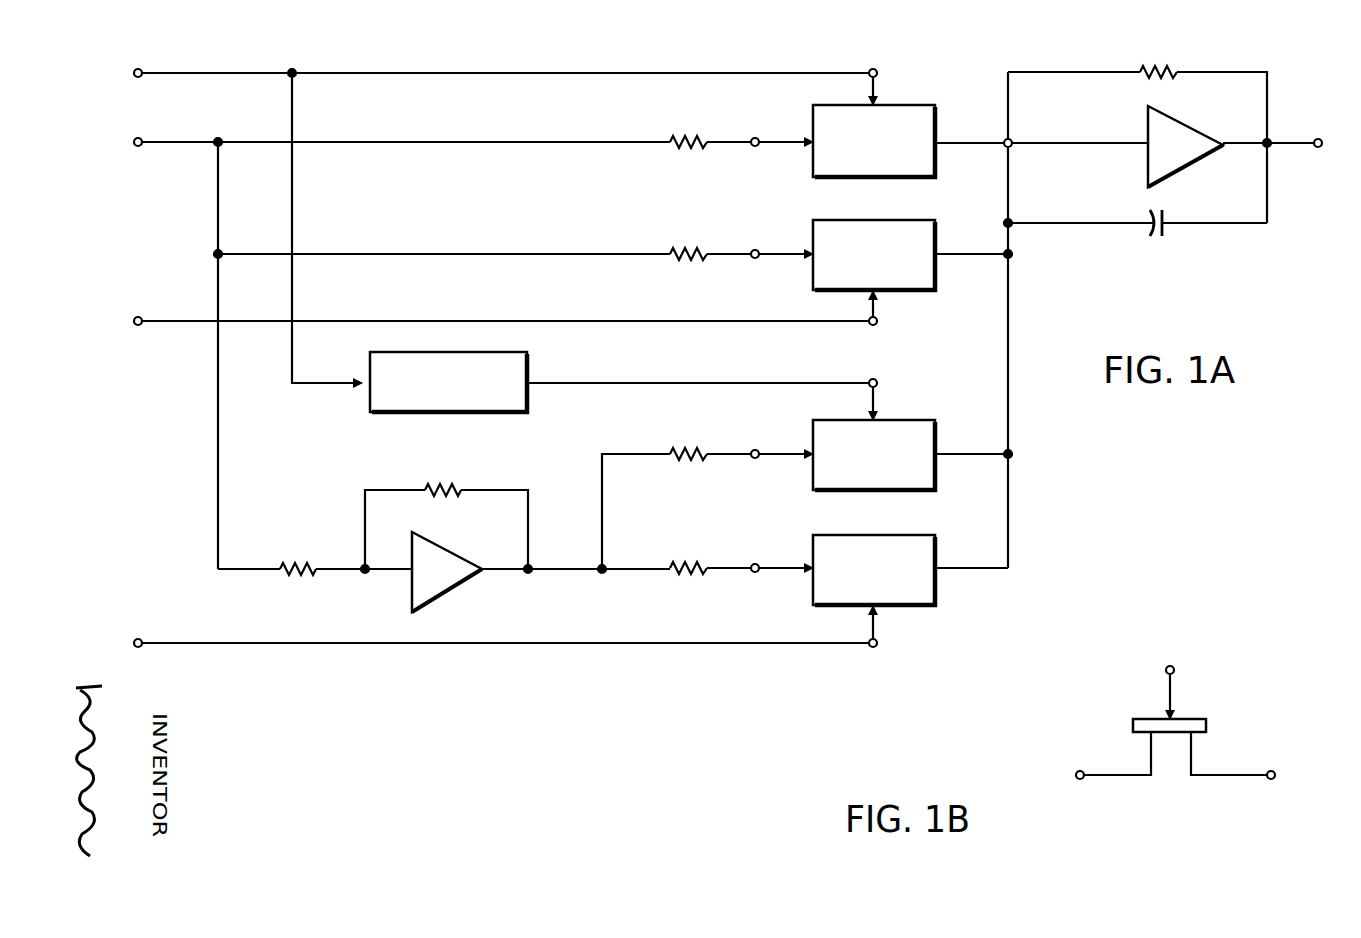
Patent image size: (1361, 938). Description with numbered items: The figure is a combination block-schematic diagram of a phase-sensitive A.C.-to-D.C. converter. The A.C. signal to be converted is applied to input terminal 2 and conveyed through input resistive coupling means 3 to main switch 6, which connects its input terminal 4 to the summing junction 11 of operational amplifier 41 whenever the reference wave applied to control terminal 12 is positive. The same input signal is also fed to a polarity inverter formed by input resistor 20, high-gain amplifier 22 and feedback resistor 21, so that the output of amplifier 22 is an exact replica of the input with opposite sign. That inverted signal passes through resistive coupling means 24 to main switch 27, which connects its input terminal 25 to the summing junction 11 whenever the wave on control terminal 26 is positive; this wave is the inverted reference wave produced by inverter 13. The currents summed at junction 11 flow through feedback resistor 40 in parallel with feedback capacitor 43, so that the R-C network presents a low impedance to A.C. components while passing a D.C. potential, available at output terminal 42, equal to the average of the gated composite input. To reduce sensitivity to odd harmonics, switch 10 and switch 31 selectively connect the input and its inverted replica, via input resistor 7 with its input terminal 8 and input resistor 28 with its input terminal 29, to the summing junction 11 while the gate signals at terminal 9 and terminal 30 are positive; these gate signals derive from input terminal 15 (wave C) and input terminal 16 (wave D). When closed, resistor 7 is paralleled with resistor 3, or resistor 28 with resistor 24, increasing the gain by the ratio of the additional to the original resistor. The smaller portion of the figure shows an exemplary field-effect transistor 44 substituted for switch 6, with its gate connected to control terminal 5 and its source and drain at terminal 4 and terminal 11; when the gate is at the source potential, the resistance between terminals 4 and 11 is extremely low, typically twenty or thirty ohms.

In FIG. 1A, the input terminal 2 is at (133, 140).
In FIG. 1A, the input resistive coupling means 3 is at (682, 132).
In FIG. 1A, the input terminal of main switch 4 is at (754, 148).
In FIG. 1B, the input terminal of main switch 4 is at (1081, 780).
In FIG. 1A, the control terminal 5 is at (878, 68).
In FIG. 1B, the control terminal 5 is at (1176, 664).
In FIG. 1A, the main switch 6 is at (940, 128).
In FIG. 1A, the input resistor 7 is at (680, 245).
In FIG. 1A, the input terminal of switch 8 is at (754, 260).
In FIG. 1A, the gate terminal of switch 9 is at (880, 325).
In FIG. 1A, the switch 10 is at (942, 232).
In FIG. 1A, the summing junction 11 is at (1010, 148).
In FIG. 1B, the summing junction 11 is at (1272, 780).
In FIG. 1A, the control terminal 12 is at (134, 68).
In FIG. 1A, the inverter 13 is at (393, 418).
In FIG. 1A, the input terminal 15 is at (134, 318).
In FIG. 1A, the input terminal 16 is at (134, 630).
In FIG. 1A, the input resistor 20 is at (312, 578).
In FIG. 1A, the feedback resistor 21 is at (440, 500).
In FIG. 1A, the high-gain amplifier 22 is at (452, 594).
In FIG. 1A, the resistive coupling means 24 is at (680, 447).
In FIG. 1A, the input terminal of main switch 25 is at (757, 460).
In FIG. 1A, the control terminal of switch 26 is at (880, 380).
In FIG. 1A, the main switch 27 is at (940, 475).
In FIG. 1A, the input resistor 28 is at (680, 561).
In FIG. 1A, the input terminal of switch 29 is at (755, 574).
In FIG. 1A, the gate terminal of switch 30 is at (872, 648).
In FIG. 1A, the switch 31 is at (940, 598).
In FIG. 1A, the feedback resistor 40 is at (1158, 66).
In FIG. 1A, the operational amplifier 41 is at (1178, 176).
In FIG. 1A, the output terminal 42 is at (1318, 148).
In FIG. 1A, the feedback capacitor 43 is at (1166, 233).
In FIG. 1B, the field-effect transistor 44 is at (1186, 814).